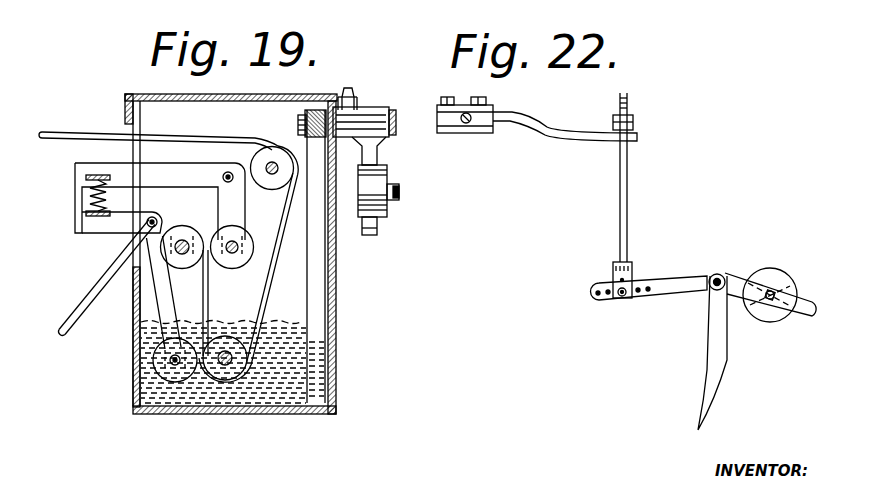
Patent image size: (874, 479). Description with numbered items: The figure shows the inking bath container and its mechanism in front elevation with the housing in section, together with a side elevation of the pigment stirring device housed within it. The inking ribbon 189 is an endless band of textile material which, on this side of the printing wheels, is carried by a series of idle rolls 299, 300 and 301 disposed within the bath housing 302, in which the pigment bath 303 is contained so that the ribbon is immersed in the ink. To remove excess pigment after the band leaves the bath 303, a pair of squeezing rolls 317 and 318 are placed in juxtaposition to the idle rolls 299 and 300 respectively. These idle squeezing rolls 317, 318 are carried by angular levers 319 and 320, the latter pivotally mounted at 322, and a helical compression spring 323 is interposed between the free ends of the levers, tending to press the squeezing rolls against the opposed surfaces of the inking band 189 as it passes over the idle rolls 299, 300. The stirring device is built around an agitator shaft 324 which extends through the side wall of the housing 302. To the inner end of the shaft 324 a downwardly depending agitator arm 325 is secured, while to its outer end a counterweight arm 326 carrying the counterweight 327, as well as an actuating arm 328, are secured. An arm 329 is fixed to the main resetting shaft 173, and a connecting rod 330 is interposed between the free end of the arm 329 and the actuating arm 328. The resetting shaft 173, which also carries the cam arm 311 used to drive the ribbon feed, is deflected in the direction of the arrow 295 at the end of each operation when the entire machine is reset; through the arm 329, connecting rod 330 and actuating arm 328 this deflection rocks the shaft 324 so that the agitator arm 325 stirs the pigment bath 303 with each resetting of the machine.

In FIG. 19, the inking ribbon 189 is at (77, 121).
In FIG. 22, the arrow 295 is at (465, 100).
In FIG. 22, the main resetting shaft 173 is at (467, 124).
In FIG. 19, the idle roll 299 is at (202, 214).
In FIG. 19, the idle roll 300 is at (222, 372).
In FIG. 19, the idle roll 301 is at (273, 160).
In FIG. 19, the bath housing 302 is at (333, 280).
In FIG. 19, the pigment bath 303 is at (285, 383).
In FIG. 19, the cam arm 311 is at (228, 171).
In FIG. 19, the squeezing roll 317 is at (255, 247).
In FIG. 19, the squeezing roll 318 is at (157, 365).
In FIG. 19, the angular lever 319 is at (157, 170).
In FIG. 19, the angular lever 320 is at (120, 280).
In FIG. 19, the pivot 322 is at (147, 225).
In FIG. 19, the helical compression spring 323 is at (87, 200).
In FIG. 19, the agitator shaft 324 is at (403, 102).
In FIG. 22, the agitator shaft 324 is at (717, 273).
In FIG. 19, the agitator arm 325 is at (320, 298).
In FIG. 22, the agitator arm 325 is at (717, 310).
In FIG. 22, the counterweight arm 326 is at (737, 283).
In FIG. 19, the counterweight 327 is at (392, 197).
In FIG. 22, the counterweight 327 is at (802, 262).
In FIG. 19, the actuating arm 328 is at (346, 91).
In FIG. 22, the actuating arm 328 is at (682, 263).
In FIG. 22, the arm 329 is at (557, 118).
In FIG. 22, the connecting rod 330 is at (627, 198).